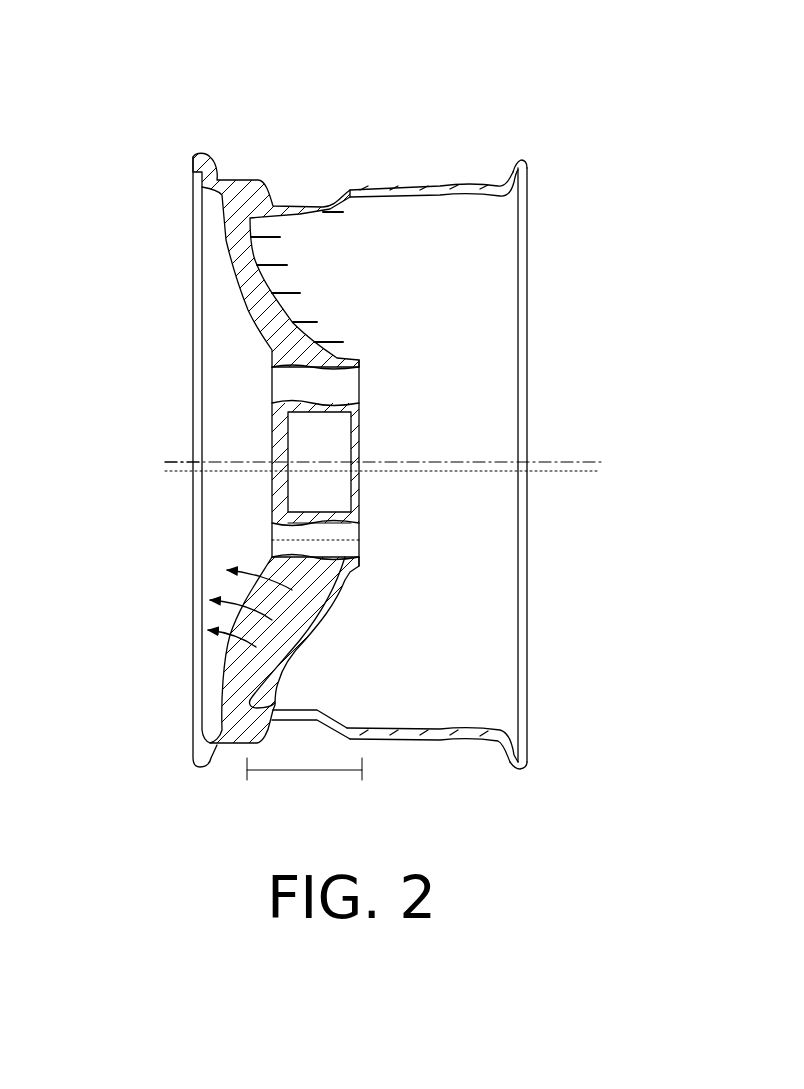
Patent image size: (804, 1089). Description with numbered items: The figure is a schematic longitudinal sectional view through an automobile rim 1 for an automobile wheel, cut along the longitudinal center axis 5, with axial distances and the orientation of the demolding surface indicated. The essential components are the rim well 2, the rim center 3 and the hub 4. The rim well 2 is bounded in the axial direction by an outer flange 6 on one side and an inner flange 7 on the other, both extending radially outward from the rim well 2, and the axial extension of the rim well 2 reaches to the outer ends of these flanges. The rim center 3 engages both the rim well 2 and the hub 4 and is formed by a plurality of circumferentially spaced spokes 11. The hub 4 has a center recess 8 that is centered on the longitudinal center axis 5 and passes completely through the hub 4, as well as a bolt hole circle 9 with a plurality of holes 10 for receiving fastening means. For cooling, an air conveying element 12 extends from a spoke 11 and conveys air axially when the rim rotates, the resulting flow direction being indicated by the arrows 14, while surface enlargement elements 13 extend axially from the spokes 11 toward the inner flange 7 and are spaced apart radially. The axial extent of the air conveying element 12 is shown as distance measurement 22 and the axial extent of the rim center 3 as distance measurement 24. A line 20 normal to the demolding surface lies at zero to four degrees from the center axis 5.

The automobile rim 1 is at (440, 95).
The rim well 2 is at (465, 163).
The rim center 3 is at (212, 258).
The hub 4 is at (383, 372).
The longitudinal center axis 5 is at (572, 458).
The outer flange 6 is at (200, 157).
The inner flange 7 is at (523, 160).
The center recess 8 is at (340, 432).
The bolt hole circle 9 is at (238, 352).
The holes 10 is at (282, 387).
The spokes 11 is at (267, 313).
The air conveying element 12 is at (261, 693).
The surface enlargement elements 13 is at (331, 205).
The arrows 14 is at (297, 623).
The line normal to the demolding surface 20 is at (177, 477).
The distance measurement of air conveying element 22 is at (303, 773).
The distance measurement of rim center 24 is at (366, 545).